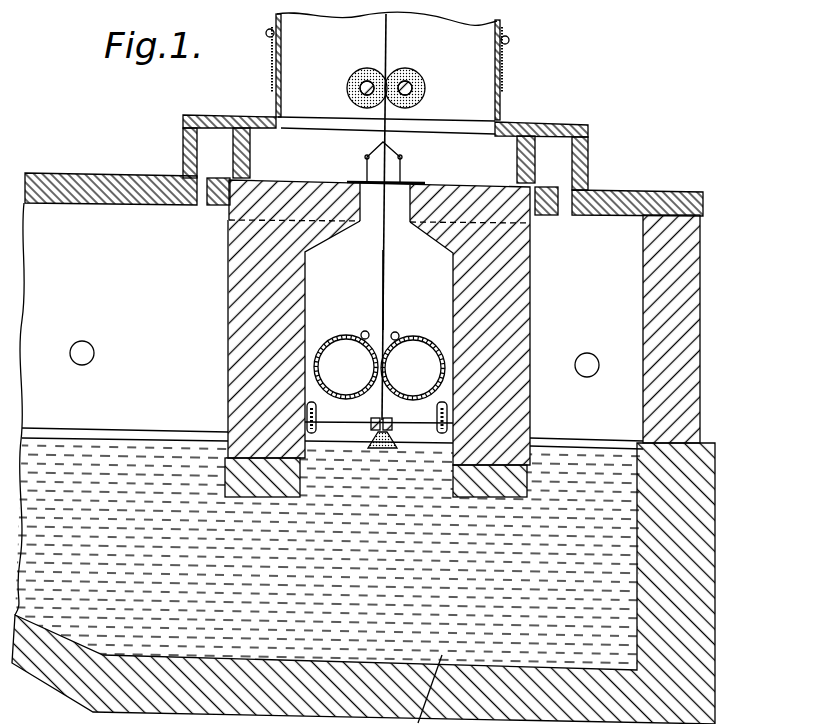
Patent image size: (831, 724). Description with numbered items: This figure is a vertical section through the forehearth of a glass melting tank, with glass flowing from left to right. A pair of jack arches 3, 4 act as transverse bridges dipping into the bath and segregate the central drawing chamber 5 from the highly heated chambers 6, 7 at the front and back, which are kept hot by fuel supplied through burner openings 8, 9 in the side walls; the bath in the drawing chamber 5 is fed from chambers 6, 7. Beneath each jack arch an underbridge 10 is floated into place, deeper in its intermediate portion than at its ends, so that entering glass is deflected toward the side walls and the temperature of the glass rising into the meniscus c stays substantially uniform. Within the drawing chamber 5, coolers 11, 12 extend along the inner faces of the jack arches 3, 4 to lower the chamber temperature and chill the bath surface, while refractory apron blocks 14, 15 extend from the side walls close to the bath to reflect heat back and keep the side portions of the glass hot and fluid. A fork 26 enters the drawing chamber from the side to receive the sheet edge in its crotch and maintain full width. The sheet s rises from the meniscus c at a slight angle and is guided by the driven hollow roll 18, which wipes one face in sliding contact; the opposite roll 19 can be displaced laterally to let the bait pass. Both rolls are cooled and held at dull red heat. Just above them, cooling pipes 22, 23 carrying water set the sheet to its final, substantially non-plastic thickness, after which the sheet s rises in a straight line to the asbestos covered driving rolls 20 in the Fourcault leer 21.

The jack arch 3 is at (240, 311).
The jack arch 4 is at (513, 312).
The drawing chamber 5 is at (379, 354).
The highly heated chamber 6 is at (125, 342).
The highly heated chamber 7 is at (586, 353).
The burner opening 8 is at (81, 350).
The burner opening 9 is at (588, 358).
The underbridge 10 is at (268, 493).
The cooler 11 is at (317, 424).
The cooler 12 is at (452, 420).
The refractory apron block 14 is at (355, 430).
The refractory apron block 15 is at (427, 430).
The driven hollow roll 18 is at (438, 338).
The roll 19 is at (329, 345).
The driving roll 20 is at (364, 76).
The Fourcault leer 21 is at (502, 26).
The cooling pipe 22 is at (398, 332).
The cooling pipe 23 is at (364, 331).
The fork 26 is at (377, 419).
The glass sheet S is at (384, 294).
The meniscus C is at (392, 433).